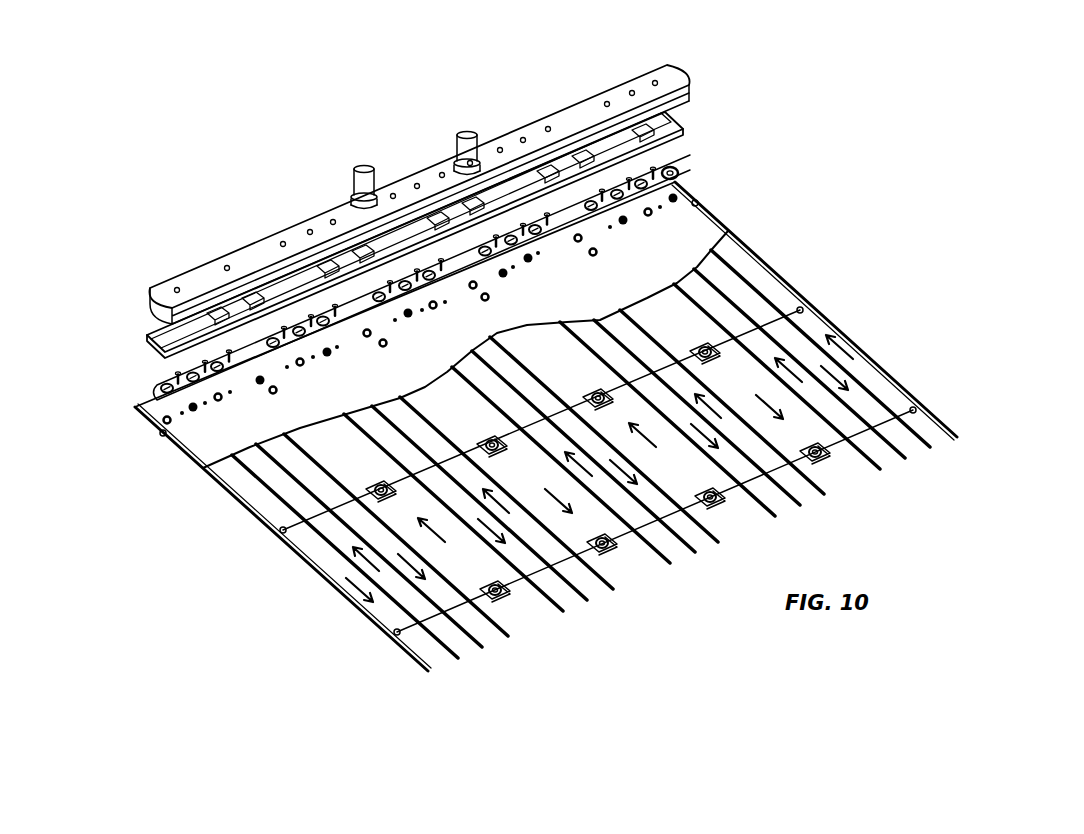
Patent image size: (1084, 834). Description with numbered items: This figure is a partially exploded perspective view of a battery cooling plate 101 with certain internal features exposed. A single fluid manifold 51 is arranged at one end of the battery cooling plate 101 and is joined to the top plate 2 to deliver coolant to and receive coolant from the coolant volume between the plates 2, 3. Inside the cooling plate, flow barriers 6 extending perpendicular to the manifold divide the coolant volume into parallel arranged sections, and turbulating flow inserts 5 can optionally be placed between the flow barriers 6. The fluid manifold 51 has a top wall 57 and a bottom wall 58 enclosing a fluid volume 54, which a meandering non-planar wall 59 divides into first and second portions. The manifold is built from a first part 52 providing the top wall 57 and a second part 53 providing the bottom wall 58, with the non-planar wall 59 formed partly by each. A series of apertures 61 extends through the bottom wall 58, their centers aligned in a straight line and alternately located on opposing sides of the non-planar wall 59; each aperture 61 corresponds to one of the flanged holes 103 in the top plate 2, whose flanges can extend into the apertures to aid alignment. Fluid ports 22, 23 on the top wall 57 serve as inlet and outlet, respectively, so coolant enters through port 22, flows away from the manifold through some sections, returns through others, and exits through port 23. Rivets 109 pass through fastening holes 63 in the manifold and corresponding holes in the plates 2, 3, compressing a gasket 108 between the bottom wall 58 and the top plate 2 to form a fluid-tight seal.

The top plate 2 is at (710, 227).
The plate 3 is at (853, 338).
The turbulating flow inserts 5 is at (890, 393).
The flow barriers 6 is at (757, 293).
The fluid port 22 is at (358, 167).
The fluid port 23 is at (466, 130).
The fluid manifold 51 is at (411, 221).
The first part 52 is at (405, 183).
The second part 53 is at (445, 244).
The fluid volume 54 is at (152, 320).
The top wall 57 is at (253, 253).
The bottom wall 58 is at (152, 362).
The non-planar wall 59 is at (674, 119).
The apertures 61 is at (258, 318).
The fastening holes 63 is at (310, 231).
The battery cooling plate 101 is at (188, 477).
The flanged holes 103 is at (325, 357).
The gasket 108 is at (692, 175).
The rivets 109 is at (553, 222).